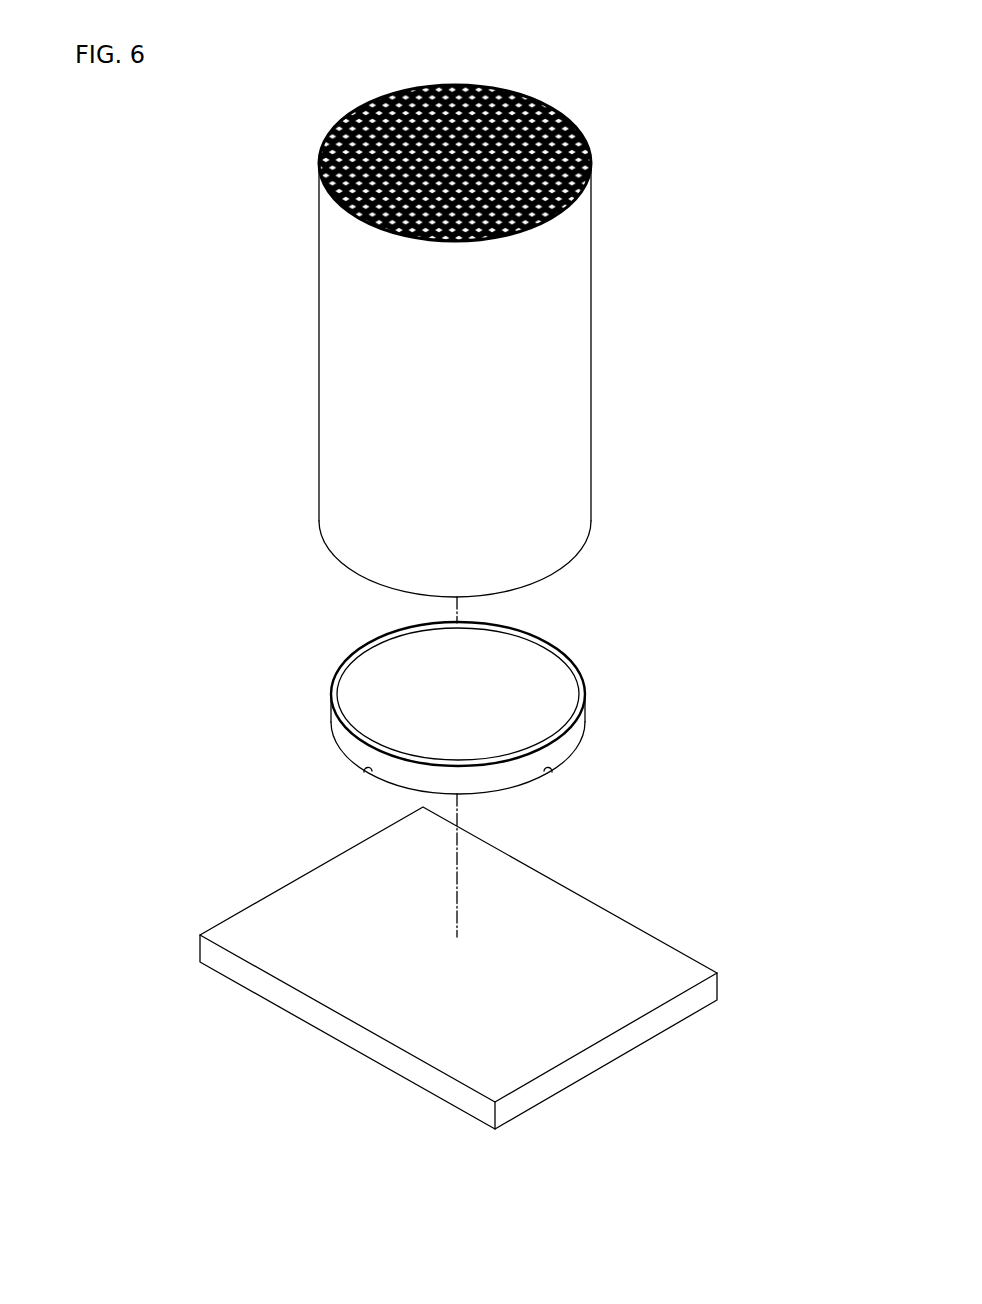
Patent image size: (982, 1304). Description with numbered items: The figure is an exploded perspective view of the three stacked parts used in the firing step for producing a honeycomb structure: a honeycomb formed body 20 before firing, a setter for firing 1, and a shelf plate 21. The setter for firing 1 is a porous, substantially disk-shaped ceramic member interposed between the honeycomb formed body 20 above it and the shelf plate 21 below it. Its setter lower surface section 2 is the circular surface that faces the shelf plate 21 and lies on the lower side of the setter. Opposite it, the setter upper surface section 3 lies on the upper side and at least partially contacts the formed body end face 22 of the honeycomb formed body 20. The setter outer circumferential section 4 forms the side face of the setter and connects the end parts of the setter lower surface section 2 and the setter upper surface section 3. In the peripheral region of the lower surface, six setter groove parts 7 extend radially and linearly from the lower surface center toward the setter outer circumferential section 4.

The honeycomb formed body 20 is at (450, 341).
The formed body end face 22 is at (565, 564).
The setter for firing 1 is at (437, 729).
The setter lower surface section 2 is at (345, 757).
The setter upper surface section 3 is at (560, 675).
The setter outer circumferential section 4 is at (550, 757).
The setter groove parts 7 is at (368, 773).
The shelf plate 21 is at (577, 908).